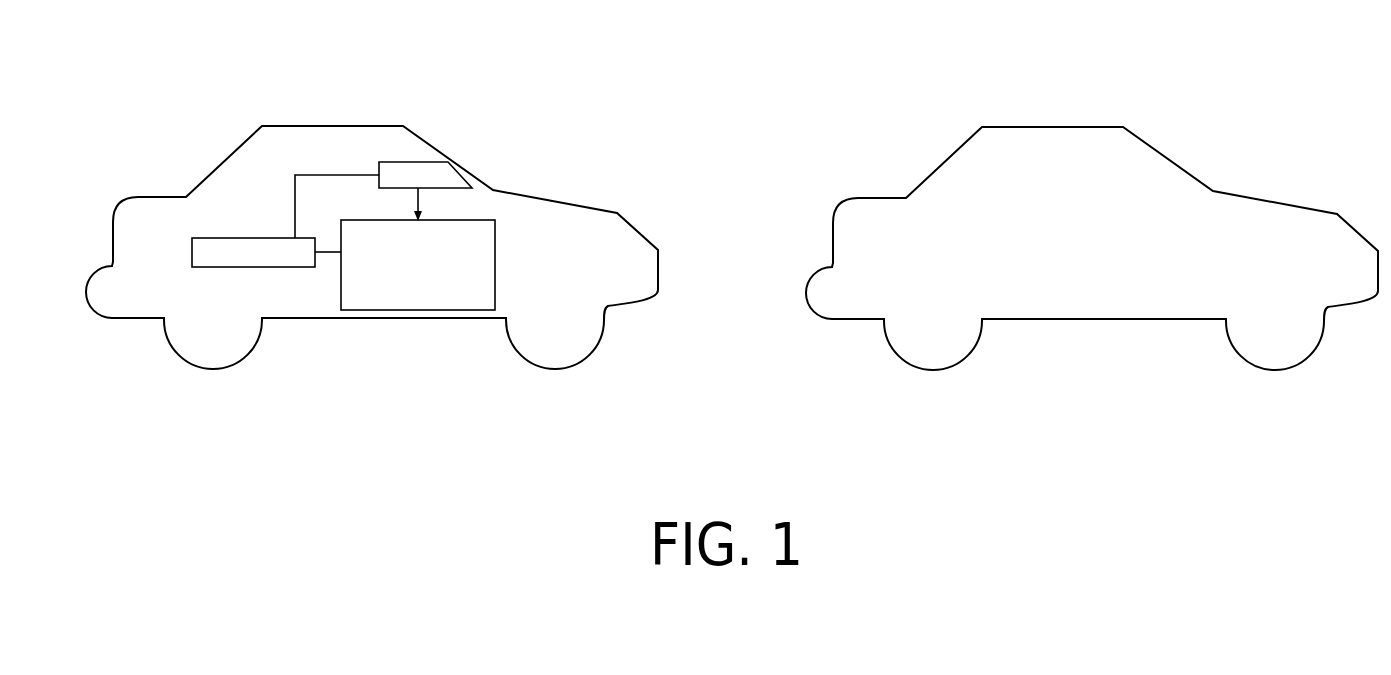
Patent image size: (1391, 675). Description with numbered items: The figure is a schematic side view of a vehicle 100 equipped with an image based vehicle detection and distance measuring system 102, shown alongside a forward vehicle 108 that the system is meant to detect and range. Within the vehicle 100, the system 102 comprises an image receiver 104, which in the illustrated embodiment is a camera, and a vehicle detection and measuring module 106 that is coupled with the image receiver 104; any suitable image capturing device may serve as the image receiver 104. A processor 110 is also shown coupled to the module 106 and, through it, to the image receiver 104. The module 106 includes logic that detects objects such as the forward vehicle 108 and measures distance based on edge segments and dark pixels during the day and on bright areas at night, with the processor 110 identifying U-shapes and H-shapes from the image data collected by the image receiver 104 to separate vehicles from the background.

The vehicle 100 is at (198, 78).
The image based vehicle detection and distance measuring system 102 is at (503, 130).
The image receiver 104 is at (435, 190).
The vehicle detection and measuring module 106 is at (497, 262).
The forward vehicle 108 is at (973, 78).
The processor 110 is at (245, 237).